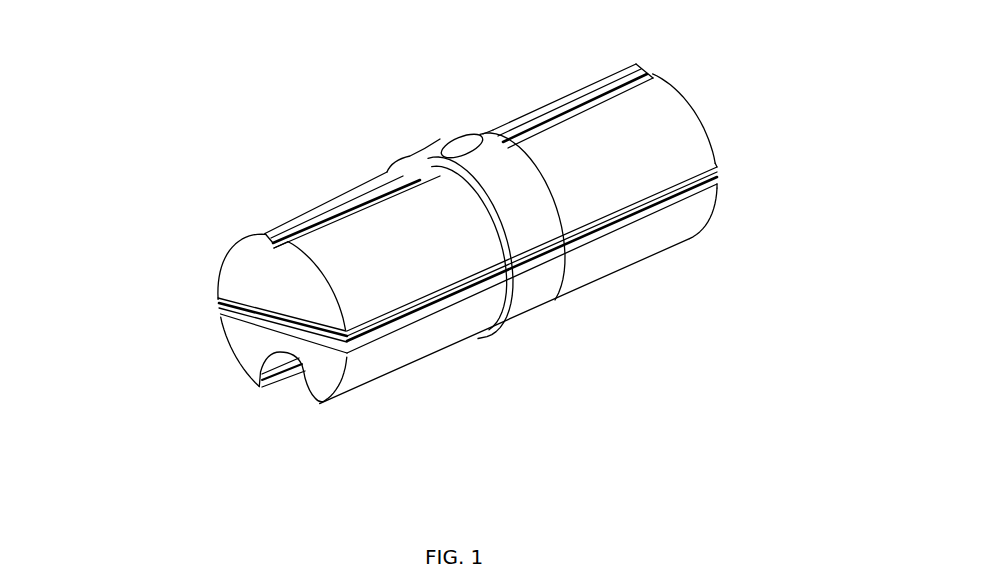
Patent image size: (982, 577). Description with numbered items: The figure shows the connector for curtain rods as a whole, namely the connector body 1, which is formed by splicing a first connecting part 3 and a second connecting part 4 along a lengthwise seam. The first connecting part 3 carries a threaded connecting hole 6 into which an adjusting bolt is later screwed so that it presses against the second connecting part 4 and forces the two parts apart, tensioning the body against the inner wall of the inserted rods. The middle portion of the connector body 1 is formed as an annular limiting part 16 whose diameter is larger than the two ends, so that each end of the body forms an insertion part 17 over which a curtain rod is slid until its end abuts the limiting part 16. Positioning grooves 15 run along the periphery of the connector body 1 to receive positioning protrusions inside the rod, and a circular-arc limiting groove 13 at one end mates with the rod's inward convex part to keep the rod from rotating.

The connector body 1 is at (225, 109).
The first connecting part 3 is at (708, 96).
The second connecting part 4 is at (730, 229).
The threaded connecting hole 6 is at (457, 128).
The limiting groove 13 is at (296, 393).
The positioning groove 15 is at (336, 187).
The limiting part 16 is at (536, 298).
The insertion part 17 is at (673, 156).